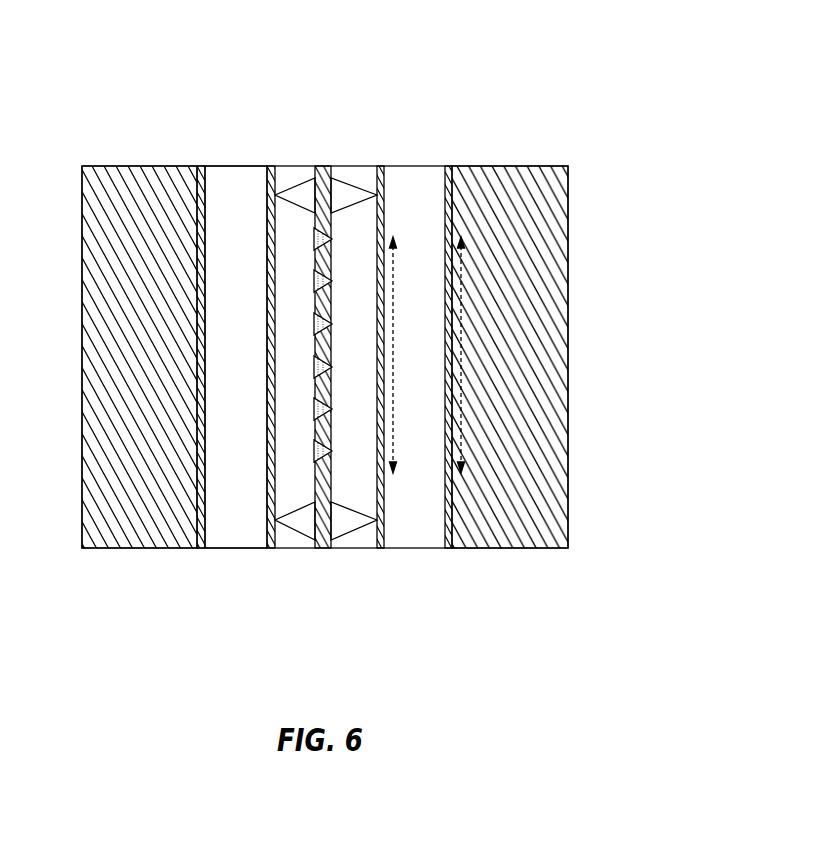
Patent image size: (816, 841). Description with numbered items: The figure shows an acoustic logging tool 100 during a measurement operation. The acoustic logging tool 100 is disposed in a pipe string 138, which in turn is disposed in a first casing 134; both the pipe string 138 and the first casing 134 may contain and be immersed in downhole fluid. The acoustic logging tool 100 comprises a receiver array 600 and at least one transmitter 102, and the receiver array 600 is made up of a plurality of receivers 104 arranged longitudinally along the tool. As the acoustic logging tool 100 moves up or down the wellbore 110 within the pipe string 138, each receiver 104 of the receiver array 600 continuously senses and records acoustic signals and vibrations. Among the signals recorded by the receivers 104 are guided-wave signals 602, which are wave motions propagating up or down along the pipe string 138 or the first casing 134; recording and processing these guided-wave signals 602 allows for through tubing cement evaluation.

The first casing 134 is at (201, 158).
The pipe string 138 is at (270, 560).
The wellbore 110 is at (224, 570).
The acoustic logging tool 100 is at (332, 225).
The receiver array 600 is at (314, 383).
The receiver 104 is at (332, 239).
The transmitter 102 is at (332, 451).
The guided-wave signal 602 is at (393, 297).